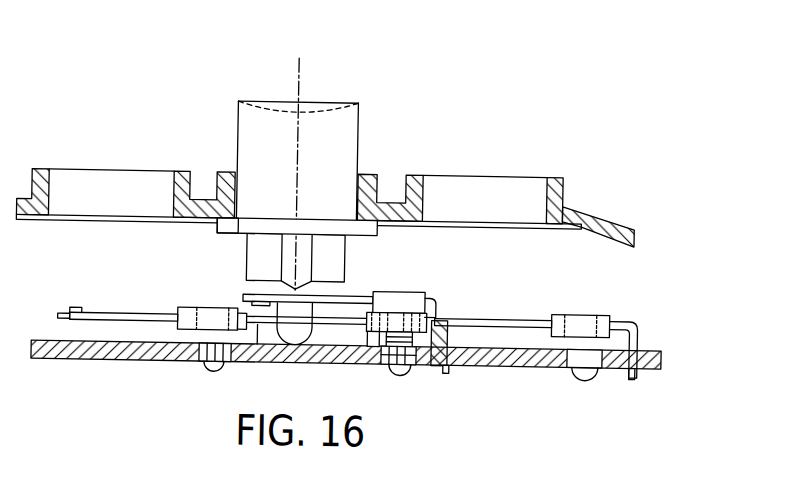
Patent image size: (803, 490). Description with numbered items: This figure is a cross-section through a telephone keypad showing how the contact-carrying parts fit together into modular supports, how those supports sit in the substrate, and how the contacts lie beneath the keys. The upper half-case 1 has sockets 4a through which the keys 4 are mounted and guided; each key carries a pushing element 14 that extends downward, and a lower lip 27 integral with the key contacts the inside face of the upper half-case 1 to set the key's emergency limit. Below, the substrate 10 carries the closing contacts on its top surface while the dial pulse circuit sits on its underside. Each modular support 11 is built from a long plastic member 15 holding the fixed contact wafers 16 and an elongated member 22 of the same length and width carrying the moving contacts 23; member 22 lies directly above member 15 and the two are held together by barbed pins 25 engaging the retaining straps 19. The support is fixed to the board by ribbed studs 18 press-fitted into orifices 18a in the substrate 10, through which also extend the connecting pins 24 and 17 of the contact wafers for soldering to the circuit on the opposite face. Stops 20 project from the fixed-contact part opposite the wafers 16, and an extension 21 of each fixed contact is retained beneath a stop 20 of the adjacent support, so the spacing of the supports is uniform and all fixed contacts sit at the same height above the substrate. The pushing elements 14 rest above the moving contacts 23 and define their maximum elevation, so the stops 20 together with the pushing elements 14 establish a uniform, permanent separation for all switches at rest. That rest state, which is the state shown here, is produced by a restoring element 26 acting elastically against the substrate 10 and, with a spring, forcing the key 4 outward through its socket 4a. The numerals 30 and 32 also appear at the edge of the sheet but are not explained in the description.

The upper half-case 1 is at (584, 209).
The key 4 is at (344, 141).
The socket 4a is at (233, 173).
The pushing element 14 is at (289, 247).
The lower lip 27 is at (324, 233).
The long member 15 is at (208, 314).
The extension 21 is at (65, 328).
The contact wafer 16 is at (358, 317).
The substrate 10 is at (350, 324).
The stop 20 is at (242, 303).
The restoring element 26 is at (308, 350).
The elongated member 22 is at (408, 302).
The modular support 11 is at (437, 281).
The retaining strap 19 is at (375, 312).
The moving contact 23 is at (368, 323).
The connecting pin 24 is at (437, 309).
The connecting pin 17 is at (451, 339).
The ribbed stud 18 is at (209, 349).
The orifice 18a is at (198, 376).
The barbed pin 25 is at (387, 348).
The member 30 is at (296, 483).
The member 32 is at (116, 481).